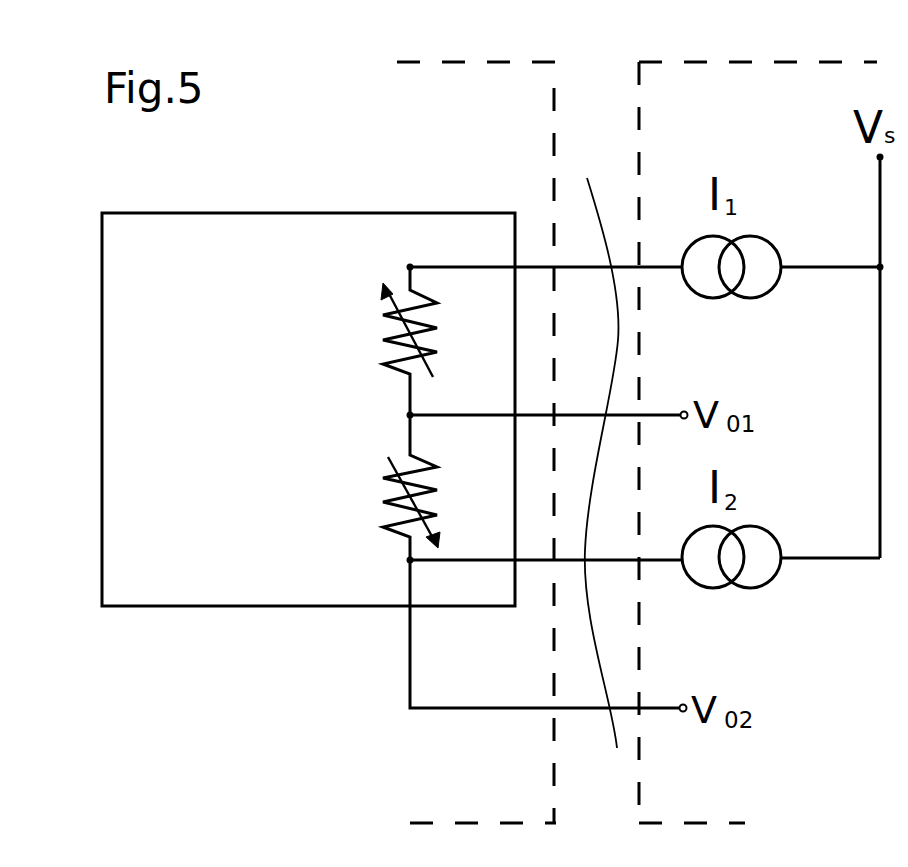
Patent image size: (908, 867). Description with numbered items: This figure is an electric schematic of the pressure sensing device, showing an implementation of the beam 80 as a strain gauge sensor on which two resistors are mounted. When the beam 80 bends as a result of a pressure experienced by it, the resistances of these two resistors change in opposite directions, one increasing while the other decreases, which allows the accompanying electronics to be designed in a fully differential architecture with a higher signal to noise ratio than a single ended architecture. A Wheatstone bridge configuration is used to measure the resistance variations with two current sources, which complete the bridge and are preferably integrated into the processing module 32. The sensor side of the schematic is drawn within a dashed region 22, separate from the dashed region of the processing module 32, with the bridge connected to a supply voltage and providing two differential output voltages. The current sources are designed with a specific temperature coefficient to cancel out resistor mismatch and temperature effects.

The sensor-side dashed region 22 is at (507, 78).
The processing module 32 is at (725, 78).
The beam 80 is at (322, 250).